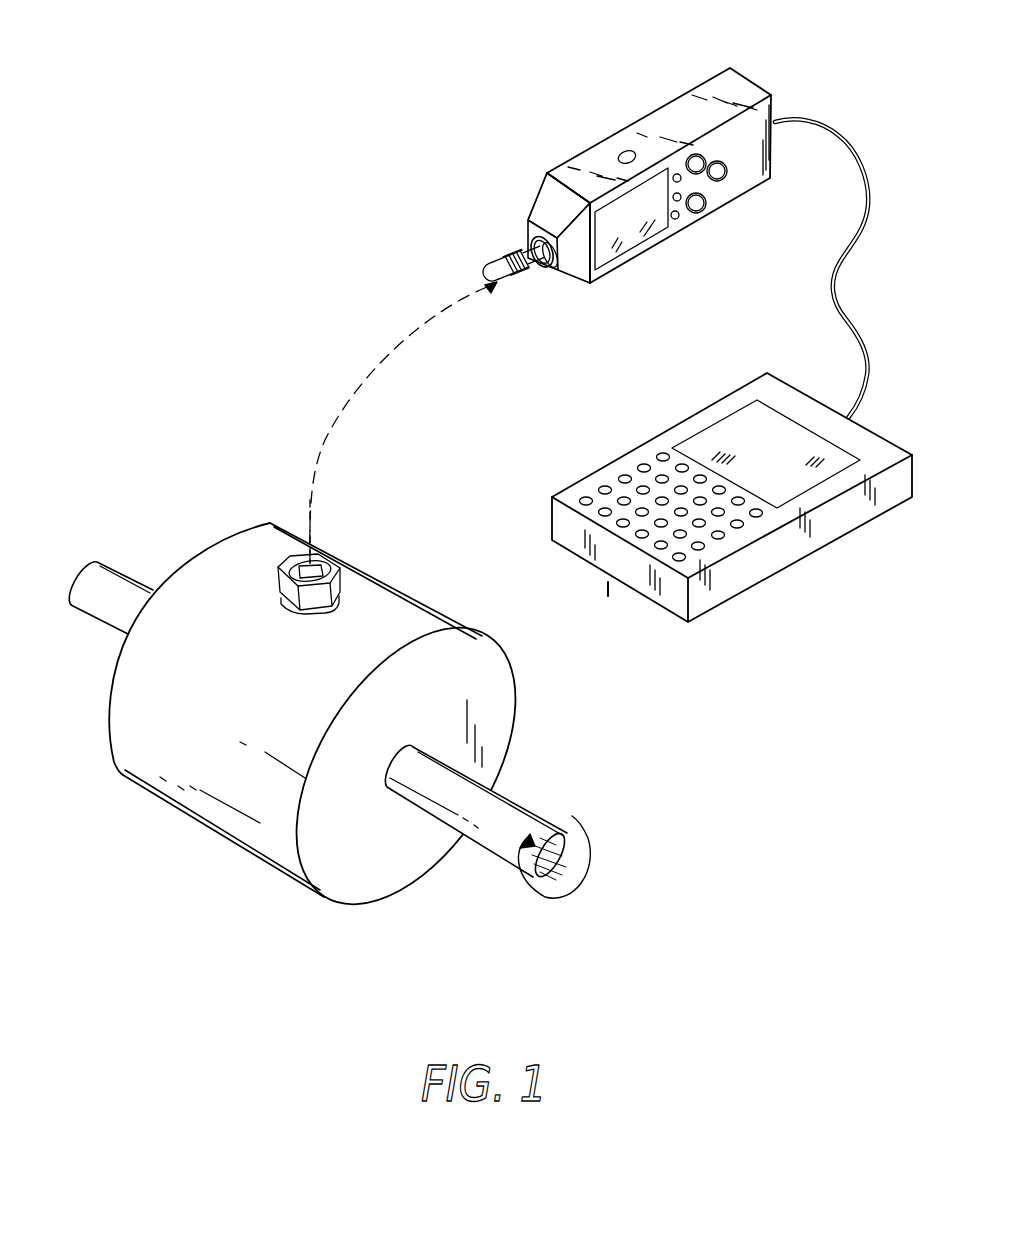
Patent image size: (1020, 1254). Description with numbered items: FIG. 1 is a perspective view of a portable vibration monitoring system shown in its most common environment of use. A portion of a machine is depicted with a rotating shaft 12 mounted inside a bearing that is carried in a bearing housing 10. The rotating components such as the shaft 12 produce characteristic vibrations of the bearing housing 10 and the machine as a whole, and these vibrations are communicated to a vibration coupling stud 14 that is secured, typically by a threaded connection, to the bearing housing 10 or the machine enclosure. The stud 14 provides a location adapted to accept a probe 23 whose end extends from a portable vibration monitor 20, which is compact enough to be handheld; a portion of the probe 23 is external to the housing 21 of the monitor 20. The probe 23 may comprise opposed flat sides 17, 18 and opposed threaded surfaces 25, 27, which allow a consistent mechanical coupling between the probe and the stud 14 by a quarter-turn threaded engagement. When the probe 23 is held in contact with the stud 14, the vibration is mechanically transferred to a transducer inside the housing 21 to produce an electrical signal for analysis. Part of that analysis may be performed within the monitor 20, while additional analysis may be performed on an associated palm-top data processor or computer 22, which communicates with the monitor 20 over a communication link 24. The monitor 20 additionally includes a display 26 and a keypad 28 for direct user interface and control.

The bearing housing 10 is at (372, 606).
The rotating shaft 12 is at (497, 803).
The vibration coupling stud 14 is at (330, 556).
The flat side 17 is at (527, 270).
The flat side 18 is at (497, 254).
The portable vibration monitor 20 is at (630, 67).
The housing 21 is at (550, 197).
The palm-top data processor or computer 22 is at (643, 422).
The probe 23 is at (492, 287).
The communication link 24 is at (838, 286).
The threaded surface 25 is at (513, 250).
The display 26 is at (647, 228).
The threaded surface 27 is at (517, 282).
The keypad 28 is at (698, 204).